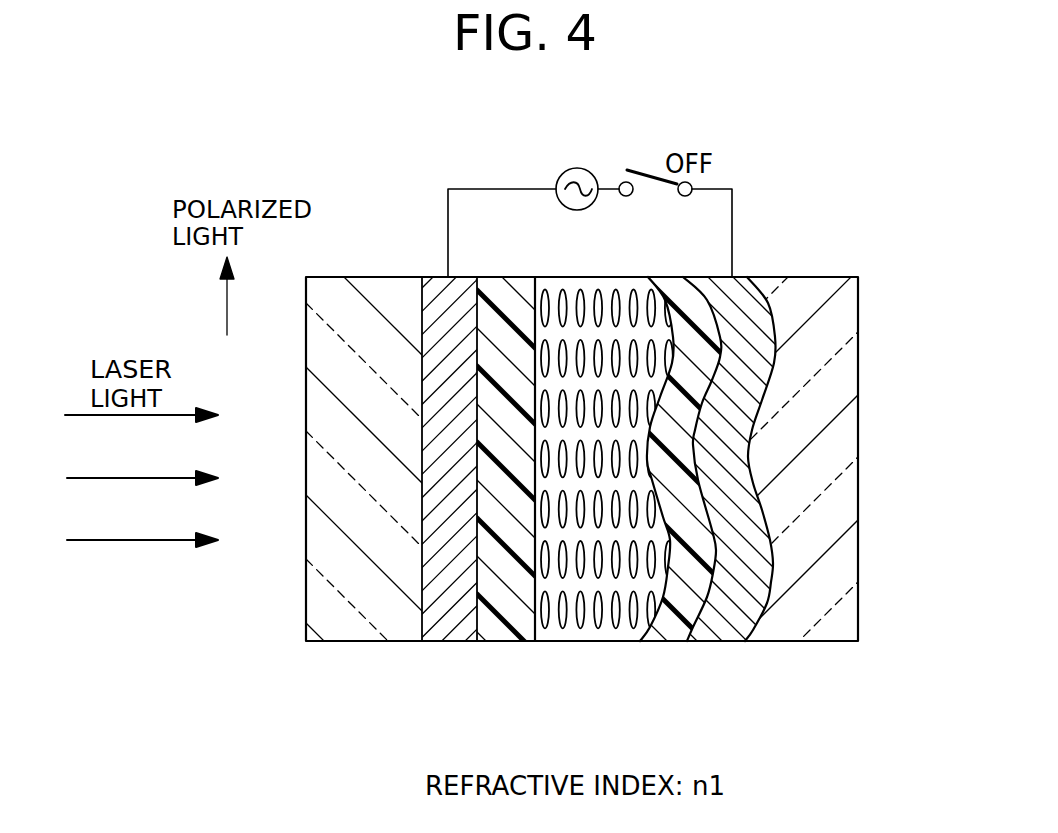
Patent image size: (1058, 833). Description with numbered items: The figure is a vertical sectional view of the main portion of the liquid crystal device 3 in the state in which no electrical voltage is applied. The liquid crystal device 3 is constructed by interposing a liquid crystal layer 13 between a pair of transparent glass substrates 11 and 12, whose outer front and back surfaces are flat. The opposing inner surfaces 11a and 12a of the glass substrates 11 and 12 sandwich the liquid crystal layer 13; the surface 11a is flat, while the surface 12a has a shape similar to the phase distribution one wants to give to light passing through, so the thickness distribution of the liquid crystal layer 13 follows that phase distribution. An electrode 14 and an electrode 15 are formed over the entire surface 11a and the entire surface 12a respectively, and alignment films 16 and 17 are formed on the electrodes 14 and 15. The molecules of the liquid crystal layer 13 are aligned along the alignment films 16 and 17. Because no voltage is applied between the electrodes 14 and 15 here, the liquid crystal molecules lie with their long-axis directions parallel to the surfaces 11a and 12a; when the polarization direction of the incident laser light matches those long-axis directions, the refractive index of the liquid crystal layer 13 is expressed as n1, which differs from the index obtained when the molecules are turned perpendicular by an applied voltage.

The liquid crystal device 3 is at (838, 232).
The glass substrate 11 is at (370, 292).
The surface of glass substrate 11a is at (422, 555).
The glass substrate 12 is at (800, 290).
The surface of glass substrate 12a is at (772, 563).
The liquid crystal layer 13 is at (607, 630).
The electrode 14 is at (448, 612).
The electrode 15 is at (730, 608).
The alignment film 16 is at (510, 610).
The alignment film 17 is at (675, 627).